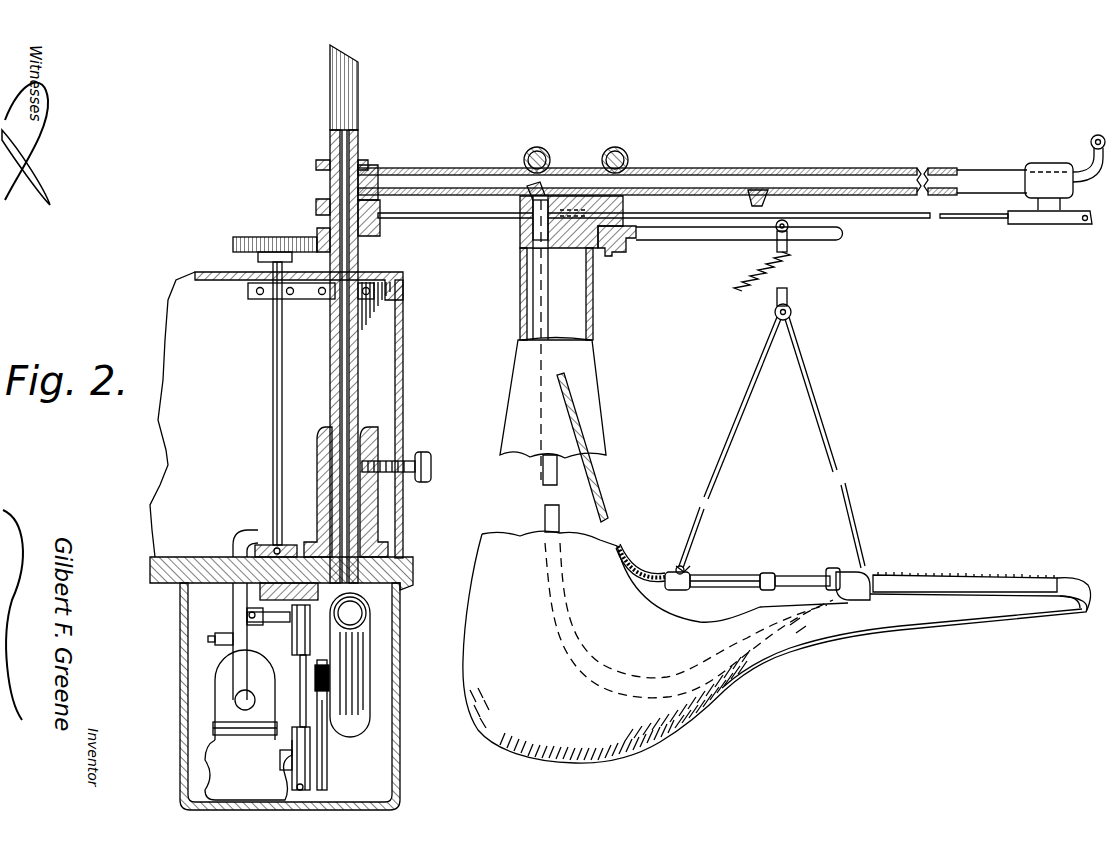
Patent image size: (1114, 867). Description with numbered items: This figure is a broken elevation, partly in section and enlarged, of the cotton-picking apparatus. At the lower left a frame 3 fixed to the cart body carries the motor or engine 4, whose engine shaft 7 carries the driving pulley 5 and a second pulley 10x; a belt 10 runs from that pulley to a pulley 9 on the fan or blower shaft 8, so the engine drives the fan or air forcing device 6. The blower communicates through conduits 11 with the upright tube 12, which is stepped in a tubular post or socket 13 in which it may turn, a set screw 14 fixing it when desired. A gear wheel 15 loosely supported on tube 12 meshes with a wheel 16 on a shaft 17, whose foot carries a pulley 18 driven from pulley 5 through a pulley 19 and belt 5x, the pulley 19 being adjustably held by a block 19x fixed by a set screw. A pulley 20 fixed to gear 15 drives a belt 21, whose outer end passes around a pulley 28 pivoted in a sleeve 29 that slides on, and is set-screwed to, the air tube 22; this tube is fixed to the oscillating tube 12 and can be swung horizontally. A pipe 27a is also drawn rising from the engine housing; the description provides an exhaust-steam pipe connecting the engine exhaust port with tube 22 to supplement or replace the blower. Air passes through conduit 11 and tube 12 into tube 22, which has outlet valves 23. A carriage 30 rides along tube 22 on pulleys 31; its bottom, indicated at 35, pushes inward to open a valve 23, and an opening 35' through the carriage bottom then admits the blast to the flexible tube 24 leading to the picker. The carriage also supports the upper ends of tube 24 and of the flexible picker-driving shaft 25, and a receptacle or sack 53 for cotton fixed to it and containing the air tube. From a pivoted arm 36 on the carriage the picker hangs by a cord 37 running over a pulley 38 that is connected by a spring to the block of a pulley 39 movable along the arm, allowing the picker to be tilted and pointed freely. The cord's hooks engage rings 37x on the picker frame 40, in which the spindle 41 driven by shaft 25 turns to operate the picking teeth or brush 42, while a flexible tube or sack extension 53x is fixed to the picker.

The frame 3 is at (302, 696).
The motor or engine 4 is at (248, 770).
The driving pulley 5 is at (292, 722).
The belt 5x is at (312, 645).
The fan or air forcing device 6 is at (205, 695).
The engine shaft 7 is at (327, 762).
The fan or blower shaft 8 is at (328, 676).
The pulley 9 is at (235, 695).
The belt 10 is at (323, 706).
The pulley 10x is at (323, 788).
The conduit 11 is at (360, 541).
The tube 12 is at (345, 400).
The tubular post or socket 13 is at (325, 478).
The set screw 14 is at (414, 466).
The gear wheel 15 is at (381, 240).
The wheel 16 is at (290, 236).
The shaft 17 is at (272, 325).
The pulley 18 is at (250, 612).
The pulley 19 is at (300, 665).
The block 19x is at (305, 624).
The pulley 20 is at (321, 208).
The belt 21 is at (456, 220).
The air tube 22 is at (692, 168).
The outlet valve 23 is at (540, 190).
The flexible tube 24 is at (548, 302).
The flexible picker-driving shaft 25 is at (598, 490).
The pipe 27a is at (247, 533).
The pulley 28 is at (1045, 228).
The sleeve 29 is at (1065, 172).
The carriage 30 is at (571, 233).
The pulley 31 is at (545, 142).
The carriage bottom (valve-opening part) 35 is at (560, 239).
The opening 35' is at (505, 216).
The pivoted arm 36 is at (739, 251).
The cord 37 is at (760, 350).
The ring 37x is at (745, 562).
The pulley 38 is at (796, 316).
The pulley 39 is at (790, 255).
The picker frame 40 is at (1067, 581).
The spindle 41 is at (808, 586).
The picking teeth or brush 42 is at (960, 578).
The receptacle or sack 53 is at (567, 398).
The flexible tube or sack extension 53x is at (758, 620).